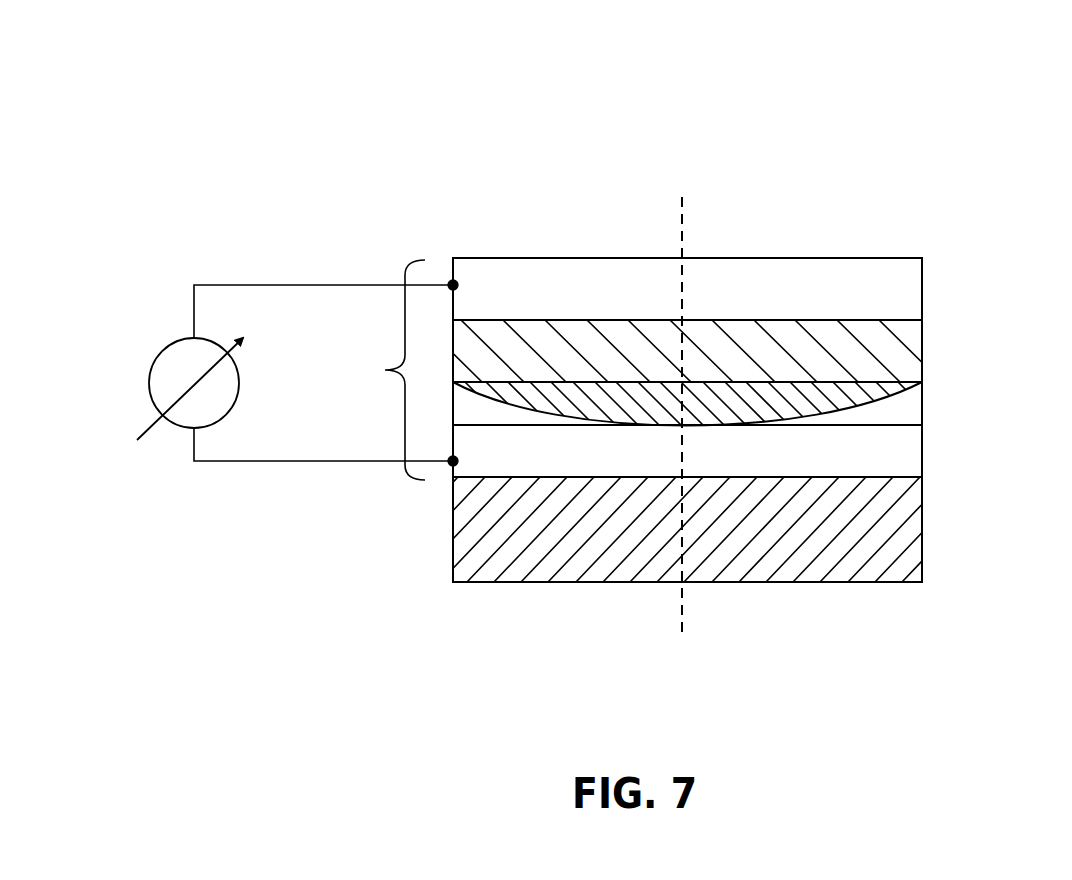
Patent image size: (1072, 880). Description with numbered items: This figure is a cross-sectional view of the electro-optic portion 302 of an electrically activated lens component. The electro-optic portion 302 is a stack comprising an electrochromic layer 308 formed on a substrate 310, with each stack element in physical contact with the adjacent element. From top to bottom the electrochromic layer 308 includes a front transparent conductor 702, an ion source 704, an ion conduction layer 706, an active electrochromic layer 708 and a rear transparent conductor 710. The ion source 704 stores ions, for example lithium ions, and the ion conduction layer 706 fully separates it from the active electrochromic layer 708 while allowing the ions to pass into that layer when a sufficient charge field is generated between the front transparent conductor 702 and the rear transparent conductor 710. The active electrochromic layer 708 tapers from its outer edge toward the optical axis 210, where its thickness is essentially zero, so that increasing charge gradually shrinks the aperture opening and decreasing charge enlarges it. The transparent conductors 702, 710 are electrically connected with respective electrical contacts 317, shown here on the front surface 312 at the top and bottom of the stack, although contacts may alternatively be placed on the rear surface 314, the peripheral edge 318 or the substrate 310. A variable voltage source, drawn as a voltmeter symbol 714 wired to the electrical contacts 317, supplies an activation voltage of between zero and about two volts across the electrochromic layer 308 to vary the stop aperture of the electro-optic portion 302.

The electro-optic portion 302 is at (774, 127).
The optical axis 210 is at (680, 213).
The front surface 312 is at (823, 258).
The front transparent conductor 702 is at (905, 290).
The ion source 704 is at (905, 352).
The ion conduction layer 706 is at (905, 395).
The active electrochromic layer 708 is at (905, 411).
The rear transparent conductor 710 is at (905, 450).
The peripheral edge 318 is at (925, 553).
The substrate 310 is at (838, 565).
The rear surface 314 is at (480, 582).
The electrical contacts 317 is at (453, 283).
The electrochromic layer 308 is at (385, 370).
The voltage source 714 is at (162, 352).